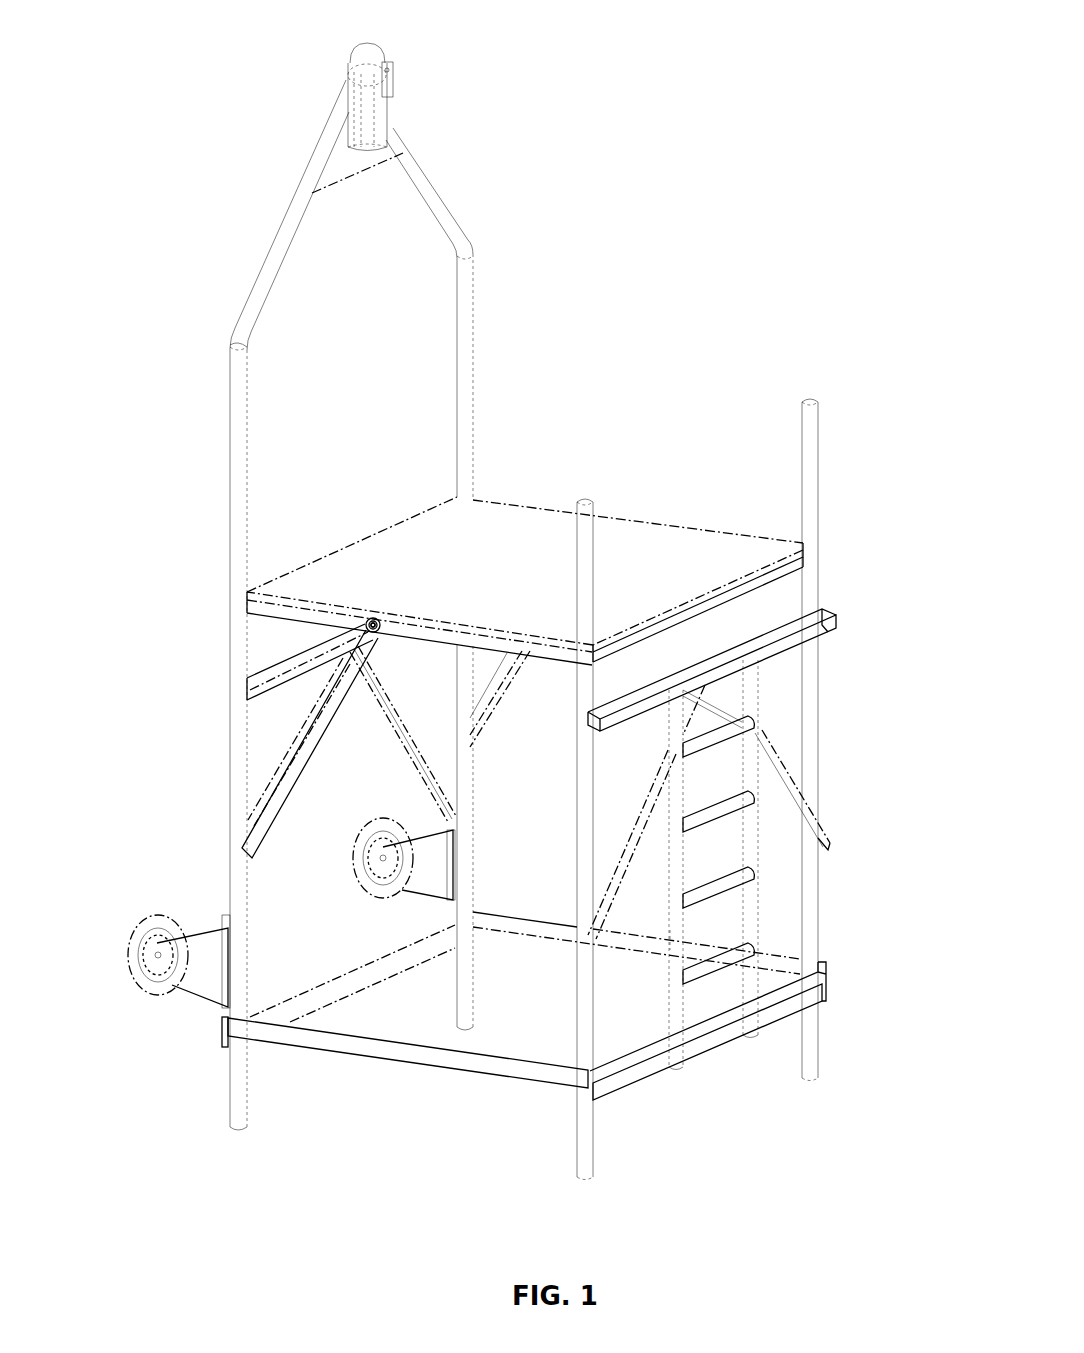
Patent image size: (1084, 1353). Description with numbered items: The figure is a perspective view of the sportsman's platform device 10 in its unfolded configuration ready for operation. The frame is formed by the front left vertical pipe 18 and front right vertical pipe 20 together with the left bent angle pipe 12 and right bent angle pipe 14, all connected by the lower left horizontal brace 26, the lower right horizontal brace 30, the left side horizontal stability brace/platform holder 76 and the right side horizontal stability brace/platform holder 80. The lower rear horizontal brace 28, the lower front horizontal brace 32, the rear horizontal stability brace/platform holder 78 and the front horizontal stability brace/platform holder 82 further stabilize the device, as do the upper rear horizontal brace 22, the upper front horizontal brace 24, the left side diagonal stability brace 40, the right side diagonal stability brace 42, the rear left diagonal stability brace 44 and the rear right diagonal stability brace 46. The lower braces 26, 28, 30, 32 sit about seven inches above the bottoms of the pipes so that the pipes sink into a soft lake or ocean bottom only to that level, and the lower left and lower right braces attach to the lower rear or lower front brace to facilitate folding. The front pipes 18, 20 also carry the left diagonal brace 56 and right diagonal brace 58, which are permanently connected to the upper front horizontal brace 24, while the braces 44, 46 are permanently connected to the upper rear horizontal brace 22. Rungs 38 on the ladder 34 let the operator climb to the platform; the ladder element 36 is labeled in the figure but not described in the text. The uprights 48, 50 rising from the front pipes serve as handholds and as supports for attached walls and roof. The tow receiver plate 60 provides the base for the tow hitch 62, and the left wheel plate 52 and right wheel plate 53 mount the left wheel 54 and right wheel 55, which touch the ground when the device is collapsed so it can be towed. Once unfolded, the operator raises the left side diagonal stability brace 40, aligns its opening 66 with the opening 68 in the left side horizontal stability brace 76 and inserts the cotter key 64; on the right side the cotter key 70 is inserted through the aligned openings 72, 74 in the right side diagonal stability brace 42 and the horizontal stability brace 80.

The platform device 10 is at (738, 405).
The left bent angle pipe 12 is at (228, 418).
The right bent angle pipe 14 is at (457, 356).
The front left vertical pipe 18 is at (580, 987).
The front right vertical pipe 20 is at (818, 898).
The upper rear horizontal brace 22 is at (272, 673).
The upper front horizontal brace 24 is at (650, 712).
The lower left horizontal brace 26 is at (318, 1043).
The lower rear horizontal brace 28 is at (297, 1000).
The lower right horizontal brace 30 is at (536, 918).
The lower front horizontal brace 32 is at (637, 1082).
The ladder 34 is at (664, 918).
The ladder 36 is at (668, 806).
The rungs 38 is at (710, 822).
The left side diagonal stability brace 40 is at (365, 650).
The right side diagonal stability brace 42 is at (490, 716).
The rear left diagonal stability brace 44 is at (313, 698).
The rear right diagonal stability brace 46 is at (398, 716).
The upright 48 is at (593, 543).
The upright 50 is at (820, 436).
The left wheel plate 52 is at (210, 935).
The right wheel plate 53 is at (438, 830).
The left wheel 54 is at (150, 916).
The right wheel 55 is at (356, 868).
The left diagonal brace 56 is at (623, 861).
The right diagonal brace 58 is at (793, 785).
The tow receiver plate 60 is at (400, 142).
The tow hitch 62 is at (360, 42).
The cotter key 64 is at (362, 629).
The opening 66 is at (378, 625).
The opening 68 is at (352, 625).
The cotter key 70 is at (620, 595).
The opening 72 is at (525, 571).
The opening 74 is at (525, 571).
The left side horizontal stability brace/platform holder 76 is at (494, 650).
The rear horizontal stability brace/platform holder 78 is at (363, 538).
The right side horizontal stability brace/platform holder 80 is at (543, 506).
The front horizontal stability brace/platform holder 82 is at (687, 619).